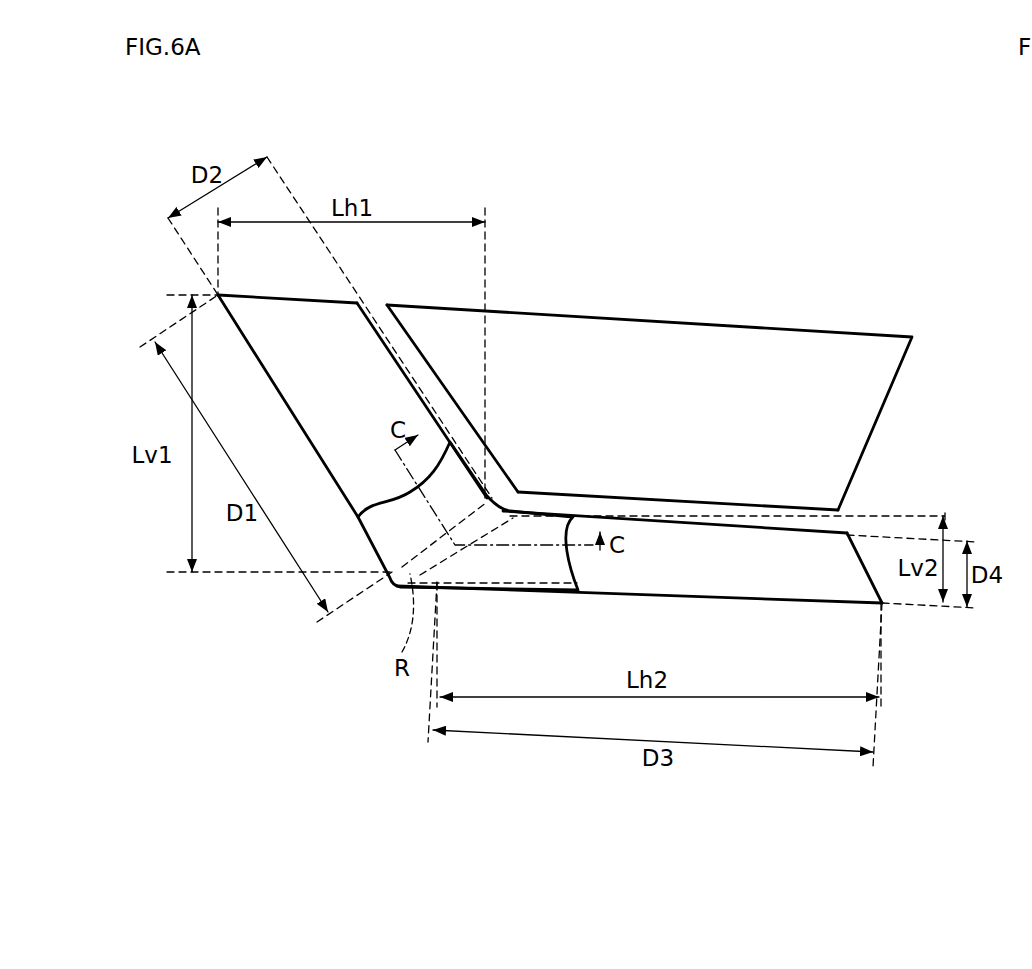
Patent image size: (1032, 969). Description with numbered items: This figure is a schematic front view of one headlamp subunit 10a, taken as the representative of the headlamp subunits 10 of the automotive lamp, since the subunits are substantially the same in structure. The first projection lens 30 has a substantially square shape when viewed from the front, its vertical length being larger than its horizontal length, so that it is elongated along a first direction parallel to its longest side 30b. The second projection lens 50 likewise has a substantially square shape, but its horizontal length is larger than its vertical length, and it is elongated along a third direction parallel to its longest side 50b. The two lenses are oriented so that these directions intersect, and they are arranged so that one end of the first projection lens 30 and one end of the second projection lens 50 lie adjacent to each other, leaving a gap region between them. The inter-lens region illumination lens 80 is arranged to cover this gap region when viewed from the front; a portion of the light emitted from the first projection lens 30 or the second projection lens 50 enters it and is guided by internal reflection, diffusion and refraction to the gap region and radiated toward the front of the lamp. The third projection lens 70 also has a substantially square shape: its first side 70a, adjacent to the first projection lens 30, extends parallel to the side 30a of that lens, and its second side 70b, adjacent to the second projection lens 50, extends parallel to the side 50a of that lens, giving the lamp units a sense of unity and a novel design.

The headlamp subunits 10 is at (624, 827).
The headlamp subunit 10a is at (582, 537).
The first projection lens 30 is at (284, 316).
The side of the first projection lens 30a is at (362, 306).
The longest side of the first projection lens 30b is at (308, 427).
The second projection lens 50 is at (818, 590).
The side of the second projection lens 50a is at (868, 522).
The longest side of the second projection lens 50b is at (743, 588).
The third projection lens 70 is at (805, 357).
The first side of the third projection lens 70a is at (436, 370).
The second side of the third projection lens 70b is at (800, 500).
The inter-lens region illumination lens 80 is at (393, 578).